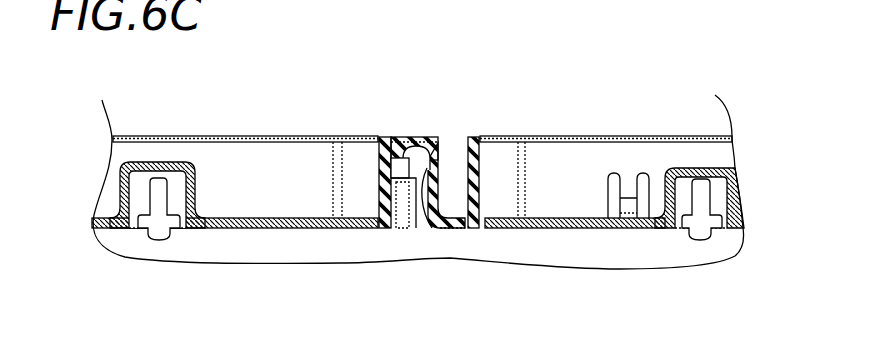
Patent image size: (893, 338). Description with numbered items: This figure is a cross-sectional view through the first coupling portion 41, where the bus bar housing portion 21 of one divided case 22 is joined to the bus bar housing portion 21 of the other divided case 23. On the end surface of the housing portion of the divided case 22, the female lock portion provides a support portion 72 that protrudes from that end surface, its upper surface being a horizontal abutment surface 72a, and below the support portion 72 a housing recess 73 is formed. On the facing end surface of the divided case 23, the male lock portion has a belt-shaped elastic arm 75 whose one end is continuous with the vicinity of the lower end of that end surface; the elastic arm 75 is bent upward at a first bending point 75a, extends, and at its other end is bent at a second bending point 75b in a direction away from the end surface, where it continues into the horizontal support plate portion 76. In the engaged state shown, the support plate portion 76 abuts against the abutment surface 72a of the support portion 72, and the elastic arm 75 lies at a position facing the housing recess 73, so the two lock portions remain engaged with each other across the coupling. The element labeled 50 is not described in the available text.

The bus bar housing portion 21 is at (268, 137).
The divided case 22 is at (222, 128).
The divided case 23 is at (601, 128).
The first coupling portion 41 is at (454, 128).
The fixing bracket 50 is at (233, 218).
The support portion 72 is at (421, 228).
The abutment surface 72a is at (398, 137).
The housing recess 73 is at (402, 228).
The elastic arm 75 is at (455, 228).
The first bending point 75a is at (433, 228).
The second bending point 75b is at (425, 137).
The support plate portion 76 is at (403, 137).